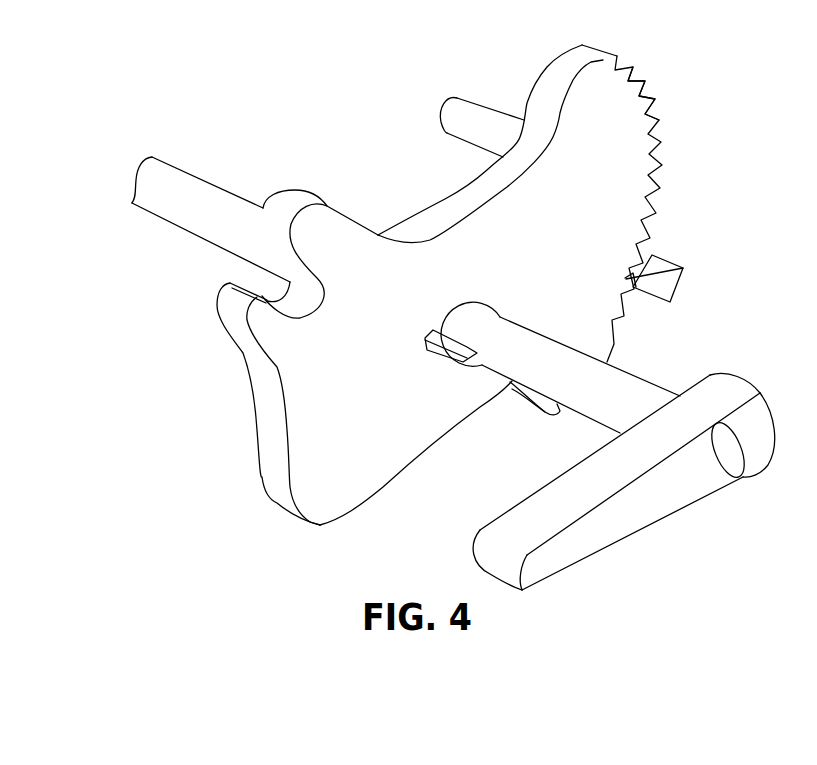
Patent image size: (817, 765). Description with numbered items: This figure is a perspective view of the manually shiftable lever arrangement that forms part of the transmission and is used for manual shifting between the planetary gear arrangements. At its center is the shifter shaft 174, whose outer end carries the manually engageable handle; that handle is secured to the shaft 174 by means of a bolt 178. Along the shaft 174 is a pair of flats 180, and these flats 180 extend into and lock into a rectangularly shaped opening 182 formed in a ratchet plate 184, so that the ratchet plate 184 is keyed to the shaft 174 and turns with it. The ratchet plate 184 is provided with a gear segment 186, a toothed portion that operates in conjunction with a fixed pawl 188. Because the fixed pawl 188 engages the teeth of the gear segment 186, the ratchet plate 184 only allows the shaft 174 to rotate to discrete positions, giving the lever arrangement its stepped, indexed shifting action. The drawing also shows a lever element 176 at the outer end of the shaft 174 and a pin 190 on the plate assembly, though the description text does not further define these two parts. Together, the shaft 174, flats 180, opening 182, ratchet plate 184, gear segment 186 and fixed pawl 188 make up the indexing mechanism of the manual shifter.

The shifter shaft 174 is at (637, 375).
The lever arm 176 is at (607, 533).
The bolt 178 is at (732, 457).
The flats 180 is at (488, 322).
The rectangularly shaped opening 182 is at (447, 337).
The ratchet plate 184 is at (658, 197).
The gear segment 186 is at (647, 121).
The fixed pawl 188 is at (682, 282).
The pin 190 is at (490, 103).